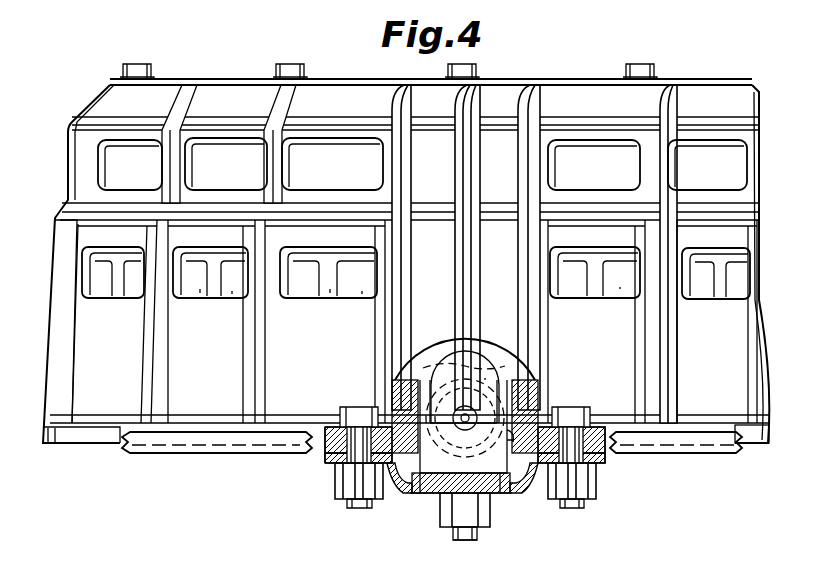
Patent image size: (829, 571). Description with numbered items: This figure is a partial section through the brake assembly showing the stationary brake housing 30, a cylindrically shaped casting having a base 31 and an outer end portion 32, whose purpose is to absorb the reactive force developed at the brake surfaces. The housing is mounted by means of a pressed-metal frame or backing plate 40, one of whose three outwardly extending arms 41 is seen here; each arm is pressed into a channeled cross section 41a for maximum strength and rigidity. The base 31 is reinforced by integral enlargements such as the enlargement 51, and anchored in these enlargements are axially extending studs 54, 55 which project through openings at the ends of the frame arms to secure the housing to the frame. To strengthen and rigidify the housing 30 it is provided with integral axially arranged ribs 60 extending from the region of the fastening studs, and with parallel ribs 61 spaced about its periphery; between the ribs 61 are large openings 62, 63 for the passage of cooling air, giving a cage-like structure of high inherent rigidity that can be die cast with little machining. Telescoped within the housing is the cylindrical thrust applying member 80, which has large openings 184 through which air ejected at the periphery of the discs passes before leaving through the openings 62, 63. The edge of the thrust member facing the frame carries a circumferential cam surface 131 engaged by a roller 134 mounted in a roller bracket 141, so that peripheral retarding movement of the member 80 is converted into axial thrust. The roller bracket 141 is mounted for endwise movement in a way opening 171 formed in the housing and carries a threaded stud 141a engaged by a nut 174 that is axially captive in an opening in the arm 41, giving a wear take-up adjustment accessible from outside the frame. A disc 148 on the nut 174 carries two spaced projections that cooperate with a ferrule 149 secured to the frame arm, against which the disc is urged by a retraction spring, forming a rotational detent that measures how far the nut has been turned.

The stationary brake housing 30 is at (748, 321).
The base 31 is at (392, 393).
The outer end portion 32 is at (660, 90).
The frame or backing plate 40 is at (611, 460).
The arm 41 is at (325, 445).
The channeled cross section 41a is at (403, 494).
The integral enlargement 51 is at (438, 337).
The axially extending stud 54 is at (356, 501).
The axially extending stud 55 is at (574, 507).
The axially arranged rib 60 is at (203, 428).
The parallel rib 61 is at (150, 348).
The opening 62 is at (122, 297).
The opening 63 is at (115, 172).
The thrust applying member 80 is at (200, 289).
The circumferential cam surface 131 is at (495, 383).
The roller 134 is at (478, 352).
The roller bracket 141 is at (505, 463).
The threaded stud 141a is at (466, 541).
The disc 148 is at (428, 496).
The ferrule 149 is at (436, 496).
The way opening 171 is at (512, 426).
The nut 174 is at (490, 514).
The opening 184 is at (232, 291).